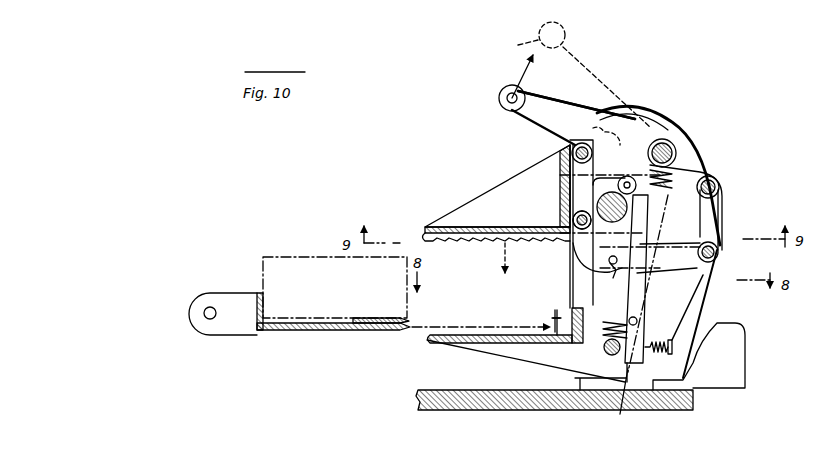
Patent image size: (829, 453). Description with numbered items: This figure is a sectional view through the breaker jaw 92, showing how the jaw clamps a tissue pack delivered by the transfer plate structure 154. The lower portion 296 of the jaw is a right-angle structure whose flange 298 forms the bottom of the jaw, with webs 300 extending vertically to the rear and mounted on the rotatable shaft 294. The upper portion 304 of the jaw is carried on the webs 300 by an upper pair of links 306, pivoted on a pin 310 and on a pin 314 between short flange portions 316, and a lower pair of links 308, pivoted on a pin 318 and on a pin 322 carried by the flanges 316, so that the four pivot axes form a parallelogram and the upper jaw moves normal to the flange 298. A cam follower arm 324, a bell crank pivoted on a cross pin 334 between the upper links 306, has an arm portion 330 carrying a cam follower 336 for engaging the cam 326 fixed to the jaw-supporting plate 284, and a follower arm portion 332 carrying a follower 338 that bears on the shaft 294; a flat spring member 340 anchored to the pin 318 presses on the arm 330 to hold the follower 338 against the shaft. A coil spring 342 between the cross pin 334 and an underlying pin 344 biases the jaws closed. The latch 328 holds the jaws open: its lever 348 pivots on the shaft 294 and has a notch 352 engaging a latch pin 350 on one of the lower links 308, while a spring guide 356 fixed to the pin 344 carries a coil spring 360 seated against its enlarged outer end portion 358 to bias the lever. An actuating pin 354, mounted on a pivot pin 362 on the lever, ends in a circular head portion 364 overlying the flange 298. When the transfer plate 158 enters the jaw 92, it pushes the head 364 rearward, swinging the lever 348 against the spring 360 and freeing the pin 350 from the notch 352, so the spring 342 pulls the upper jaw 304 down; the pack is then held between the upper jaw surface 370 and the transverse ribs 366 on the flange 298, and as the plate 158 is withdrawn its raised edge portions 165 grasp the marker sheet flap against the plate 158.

The breaker jaw 92 is at (456, 192).
The transfer plate structure 154 is at (248, 288).
The transfer plate 158 is at (316, 332).
The raised edge portions 165 is at (377, 317).
The jaw-supporting plate 284 is at (483, 410).
The rotatable shaft 294 is at (572, 195).
The lower portion of the breaker jaw 296 is at (486, 359).
The flange 298 is at (427, 340).
The webs 300 is at (703, 287).
The upper portion of the breaker jaw 304 is at (488, 190).
The upper pair of links 306 is at (707, 168).
The lower pair of links 308 is at (706, 268).
The pin 310 is at (719, 187).
The pin 314 is at (562, 140).
The short flange portions 316 is at (575, 183).
The pin 318 is at (720, 253).
The pin 322 is at (573, 218).
The cam follower arm 324 is at (562, 100).
The cam 326 is at (742, 348).
The latch 328 is at (621, 400).
The arm portion 330 is at (527, 115).
The follower arm portion 332 is at (660, 193).
The cross pin 334 is at (662, 140).
The cam follower 336 is at (510, 85).
The follower 338 is at (665, 220).
The flat spring member 340 is at (695, 146).
The coil spring 342 is at (602, 332).
The pin 344 is at (608, 352).
The lever 348 is at (650, 257).
The latch pin 350 is at (573, 273).
The notch 352 is at (573, 257).
The actuating pin 354 is at (570, 300).
The spring guide 356 is at (643, 362).
The enlarged outer end portion 358 is at (678, 338).
The coil spring 360 is at (655, 337).
The pivot pin 362 is at (640, 312).
The circular head portion 364 is at (552, 318).
The transverse ribs 366 is at (517, 330).
The upper jaw surface 370 is at (480, 243).